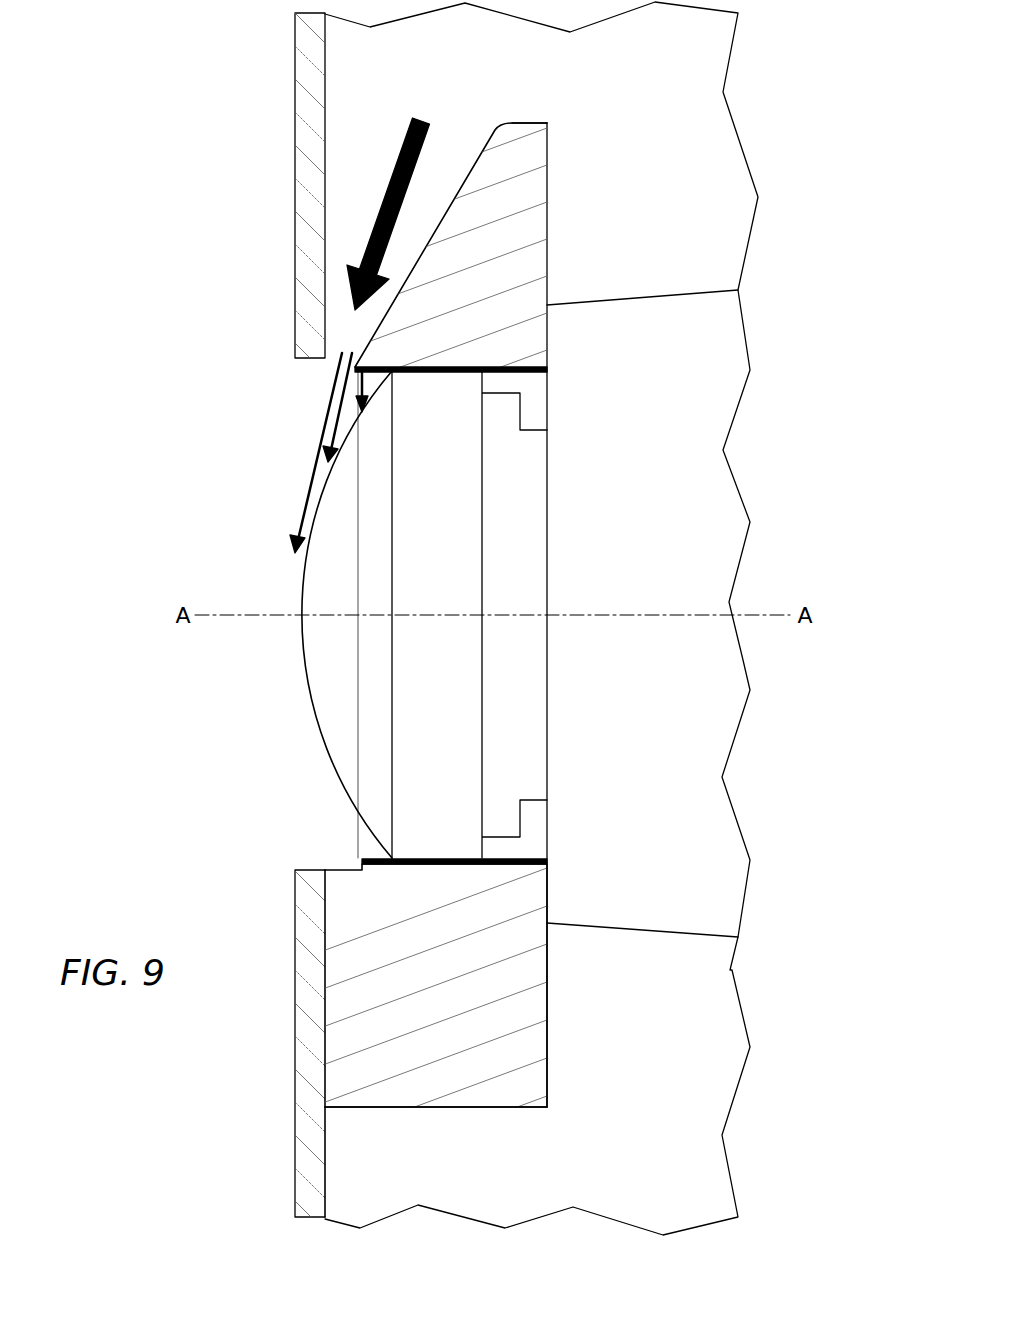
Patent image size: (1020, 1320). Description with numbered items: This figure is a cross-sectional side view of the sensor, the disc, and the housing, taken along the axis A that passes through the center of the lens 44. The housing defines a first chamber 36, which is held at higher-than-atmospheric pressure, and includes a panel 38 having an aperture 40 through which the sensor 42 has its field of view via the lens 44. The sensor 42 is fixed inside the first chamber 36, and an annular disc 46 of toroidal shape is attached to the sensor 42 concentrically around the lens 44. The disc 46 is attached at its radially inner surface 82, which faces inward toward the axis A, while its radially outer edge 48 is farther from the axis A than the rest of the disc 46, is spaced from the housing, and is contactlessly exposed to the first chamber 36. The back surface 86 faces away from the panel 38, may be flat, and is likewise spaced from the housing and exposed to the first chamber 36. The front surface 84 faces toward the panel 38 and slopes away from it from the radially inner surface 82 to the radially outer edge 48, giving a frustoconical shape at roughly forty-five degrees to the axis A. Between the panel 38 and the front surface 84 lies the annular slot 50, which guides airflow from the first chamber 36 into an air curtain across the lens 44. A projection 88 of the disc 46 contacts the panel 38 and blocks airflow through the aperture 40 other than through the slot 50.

The first chamber 36 is at (632, 103).
The panel 38 is at (295, 160).
The aperture 40 is at (305, 870).
The sensor 42 is at (628, 297).
The lens 44 is at (308, 670).
The annular disc 46 is at (547, 1043).
The radially outer edge 48 is at (520, 123).
The annular slot 50 is at (383, 380).
The radially inner surface 82 is at (547, 383).
The front surface 84 is at (473, 165).
The back surface 86 is at (547, 185).
The projection 88 is at (325, 1033).